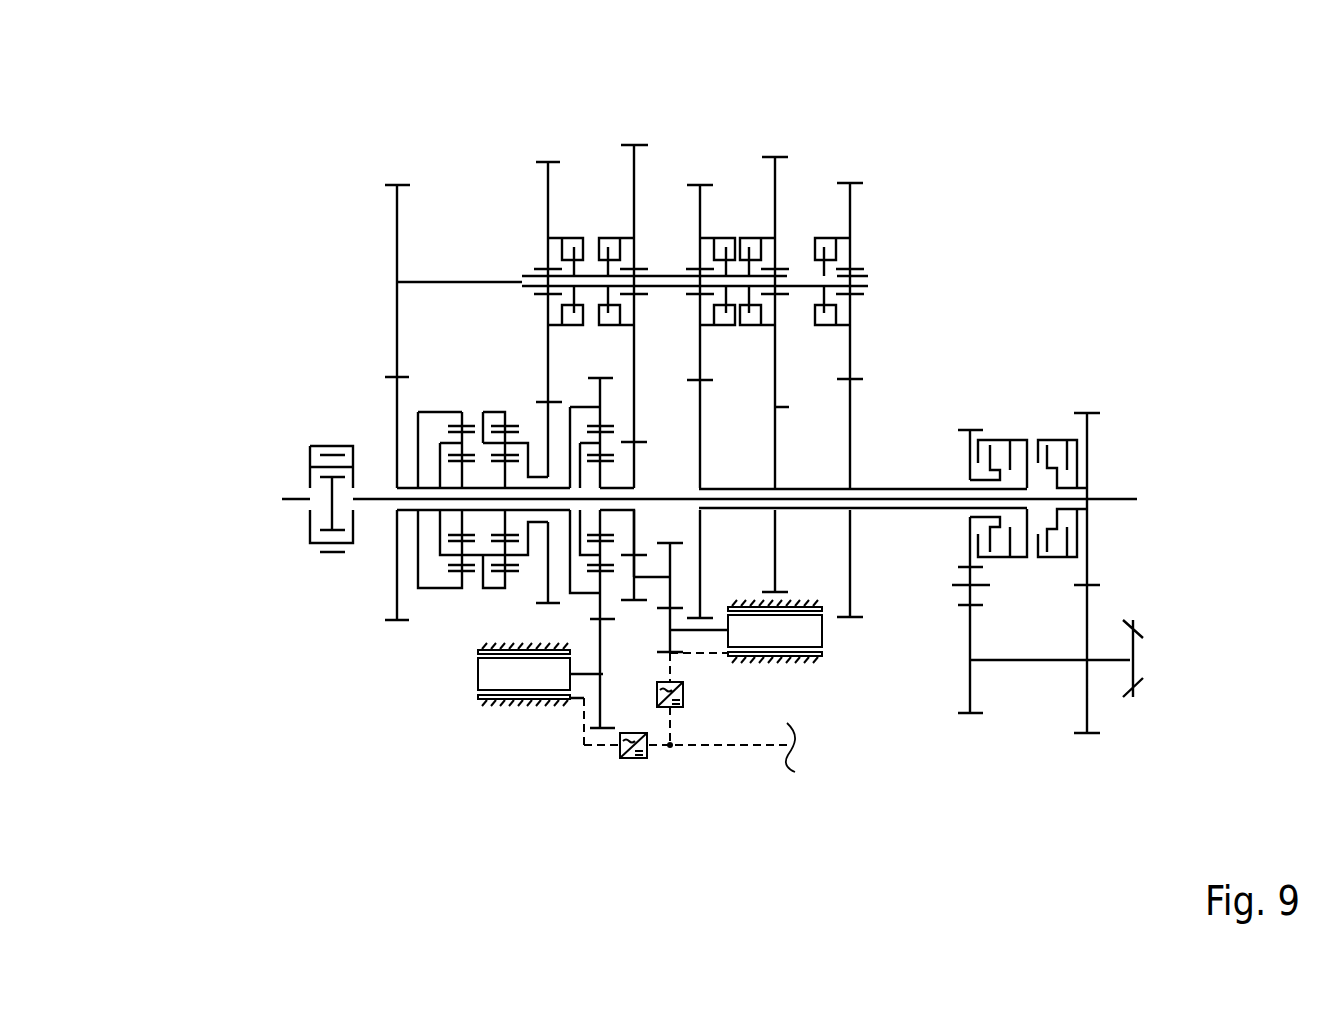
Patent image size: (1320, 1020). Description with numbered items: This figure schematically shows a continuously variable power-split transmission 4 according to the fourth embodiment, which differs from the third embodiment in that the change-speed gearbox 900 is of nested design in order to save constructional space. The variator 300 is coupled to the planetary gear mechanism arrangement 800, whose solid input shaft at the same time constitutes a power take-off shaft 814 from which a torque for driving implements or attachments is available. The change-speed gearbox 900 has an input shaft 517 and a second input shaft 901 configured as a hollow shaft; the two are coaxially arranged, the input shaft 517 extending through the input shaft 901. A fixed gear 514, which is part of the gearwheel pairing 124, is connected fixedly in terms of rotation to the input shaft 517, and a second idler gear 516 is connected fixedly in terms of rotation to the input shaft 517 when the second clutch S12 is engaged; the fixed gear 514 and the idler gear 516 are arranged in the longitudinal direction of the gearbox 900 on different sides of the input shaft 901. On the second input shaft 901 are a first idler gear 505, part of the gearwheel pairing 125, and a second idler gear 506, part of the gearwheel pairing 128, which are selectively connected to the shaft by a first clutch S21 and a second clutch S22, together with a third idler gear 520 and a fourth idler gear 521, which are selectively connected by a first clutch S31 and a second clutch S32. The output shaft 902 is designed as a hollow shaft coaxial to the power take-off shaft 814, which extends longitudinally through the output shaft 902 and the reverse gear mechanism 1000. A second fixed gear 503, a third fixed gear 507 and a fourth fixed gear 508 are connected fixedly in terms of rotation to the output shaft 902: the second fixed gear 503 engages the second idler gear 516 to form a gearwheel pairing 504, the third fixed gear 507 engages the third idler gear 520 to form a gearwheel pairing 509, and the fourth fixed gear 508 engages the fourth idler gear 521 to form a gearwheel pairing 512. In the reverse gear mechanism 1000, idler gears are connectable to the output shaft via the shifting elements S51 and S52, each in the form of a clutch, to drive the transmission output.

The continuously variable power-split transmission 4 is at (318, 158).
The gearwheel pairing 124 is at (383, 372).
The gearwheel pairing 125 is at (541, 395).
The gearwheel pairing 128 is at (641, 430).
The variator 300 is at (667, 770).
The second fixed gear 503 is at (850, 455).
The gearwheel pairing 504 is at (908, 487).
The first idler gear 505 is at (547, 213).
The second idler gear 506 is at (635, 207).
The third fixed gear 507 is at (774, 448).
The fourth fixed gear 508 is at (700, 470).
The gearwheel pairing 509 is at (863, 370).
The gearwheel pairing 512 is at (692, 368).
The fixed gear 514 is at (397, 242).
The second idler gear 516 is at (850, 230).
The input shaft 517 is at (460, 282).
The third idler gear 520 is at (775, 212).
The fourth idler gear 521 is at (700, 228).
The planetary gear mechanism arrangement 800 is at (312, 643).
The power take-off shaft 814 is at (1113, 498).
The change-speed gearbox 900 is at (878, 138).
The second input shaft 901 is at (790, 272).
The output shaft 902 is at (793, 397).
The reverse gear mechanism 1000 is at (1150, 442).
The second clutch S12 is at (825, 240).
The first clutch S21 is at (577, 228).
The second clutch S22 is at (605, 228).
The first clutch S31 is at (757, 228).
The second clutch S32 is at (723, 230).
The shifting element S51 is at (1008, 430).
The shifting element S52 is at (1057, 430).